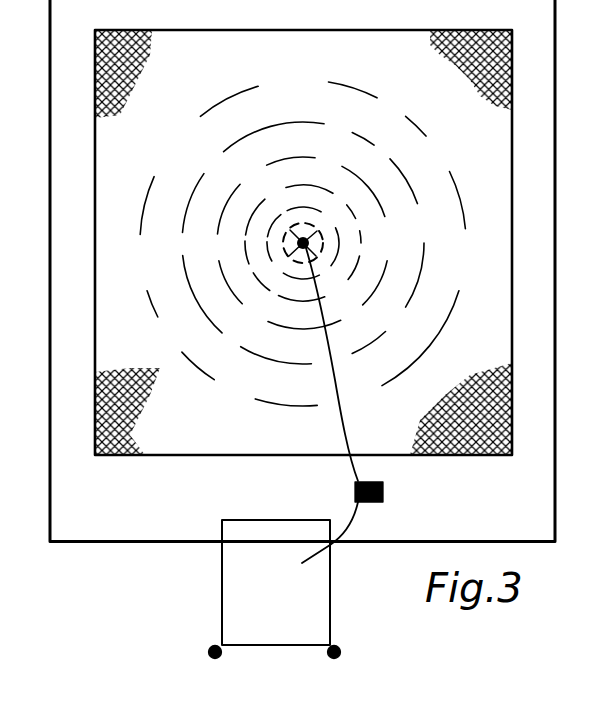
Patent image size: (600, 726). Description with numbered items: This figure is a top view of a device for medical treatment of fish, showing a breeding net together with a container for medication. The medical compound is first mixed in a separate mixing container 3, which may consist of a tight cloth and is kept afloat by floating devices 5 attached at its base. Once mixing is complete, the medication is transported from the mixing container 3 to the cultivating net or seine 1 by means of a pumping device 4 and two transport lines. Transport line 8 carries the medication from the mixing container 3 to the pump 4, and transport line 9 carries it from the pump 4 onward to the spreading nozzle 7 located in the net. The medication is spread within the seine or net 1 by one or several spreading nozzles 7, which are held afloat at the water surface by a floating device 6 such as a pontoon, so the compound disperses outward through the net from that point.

The cultivating net or seine 1 is at (229, 431).
The mixing container 3 is at (279, 599).
The pumping device 4 is at (384, 493).
The floating devices 5 is at (207, 652).
The floating device 6 is at (316, 254).
The spreading nozzle 7 is at (303, 243).
The transport line 8 is at (353, 525).
The transport line 9 is at (336, 391).